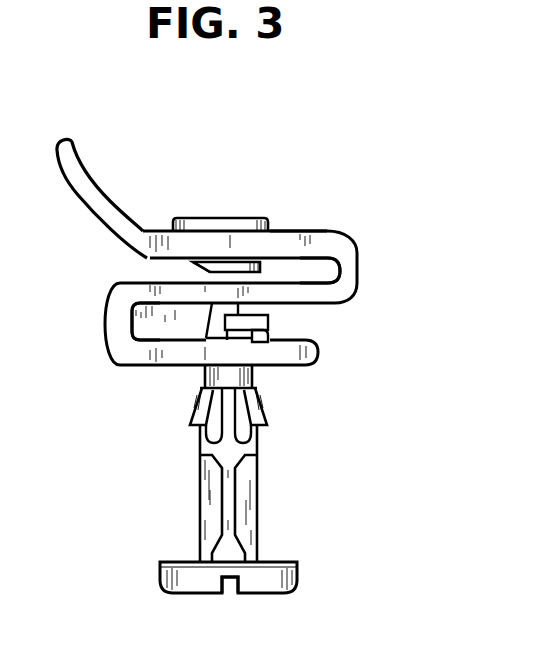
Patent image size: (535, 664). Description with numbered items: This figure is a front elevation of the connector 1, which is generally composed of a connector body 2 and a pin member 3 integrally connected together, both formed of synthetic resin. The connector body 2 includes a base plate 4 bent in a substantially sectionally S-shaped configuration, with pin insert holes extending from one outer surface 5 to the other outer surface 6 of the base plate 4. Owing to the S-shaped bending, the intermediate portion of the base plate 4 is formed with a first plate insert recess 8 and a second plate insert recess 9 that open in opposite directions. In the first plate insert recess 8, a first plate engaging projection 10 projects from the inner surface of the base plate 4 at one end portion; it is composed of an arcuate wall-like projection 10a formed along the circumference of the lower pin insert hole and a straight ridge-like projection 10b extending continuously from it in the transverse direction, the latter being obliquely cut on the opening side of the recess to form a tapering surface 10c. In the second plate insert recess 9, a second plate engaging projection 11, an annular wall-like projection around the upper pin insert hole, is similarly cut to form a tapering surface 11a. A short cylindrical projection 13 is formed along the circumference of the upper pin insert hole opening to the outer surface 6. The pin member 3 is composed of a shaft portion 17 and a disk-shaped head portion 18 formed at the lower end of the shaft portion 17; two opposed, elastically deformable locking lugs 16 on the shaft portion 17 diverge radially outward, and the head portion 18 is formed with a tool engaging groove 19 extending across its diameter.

The connector 1 is at (343, 146).
The connector body 2 is at (368, 247).
The pin member 3 is at (176, 525).
The base plate 4 is at (143, 236).
The one outer surface 5 is at (272, 366).
The other outer surface 6 is at (295, 232).
The first plate insert recess 8 is at (143, 323).
The second plate insert recess 9 is at (317, 268).
The first plate engaging projection 10 is at (255, 371).
The arcuate wall-like projection 10a is at (267, 318).
The straight ridge-like projection 10b is at (262, 342).
The tapering surface 10c is at (273, 335).
The second plate engaging projection 11 is at (232, 268).
The tapering surface 11a is at (193, 262).
The short cylindrical projection 13 is at (195, 226).
The locking lugs 16 is at (197, 407).
The shaft portion 17 is at (258, 490).
The head portion 18 is at (297, 574).
The tool engaging groove 19 is at (230, 580).